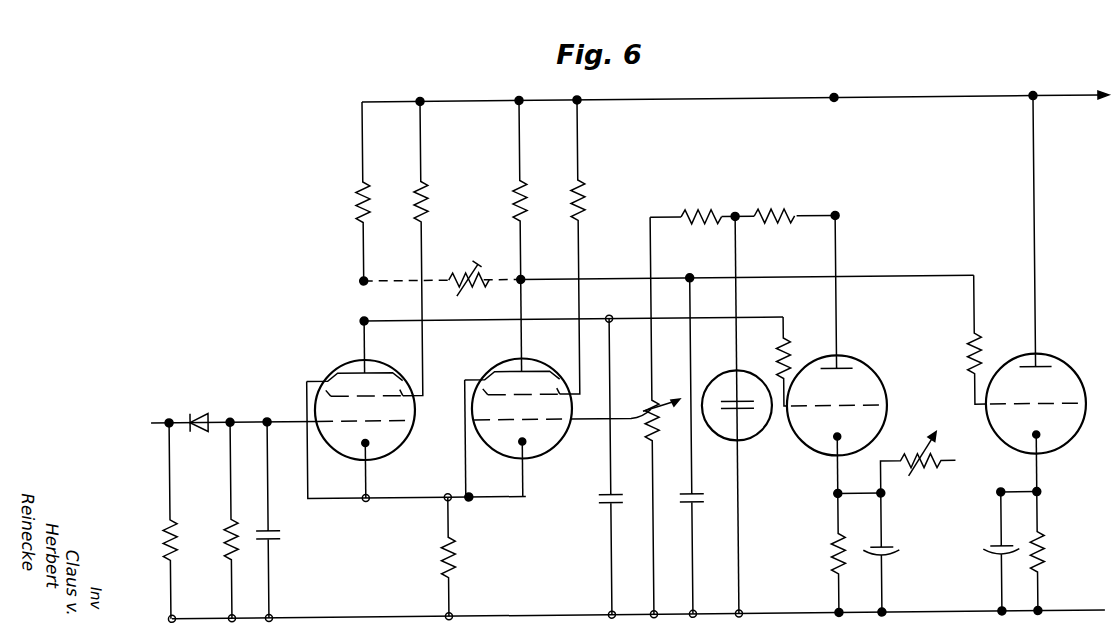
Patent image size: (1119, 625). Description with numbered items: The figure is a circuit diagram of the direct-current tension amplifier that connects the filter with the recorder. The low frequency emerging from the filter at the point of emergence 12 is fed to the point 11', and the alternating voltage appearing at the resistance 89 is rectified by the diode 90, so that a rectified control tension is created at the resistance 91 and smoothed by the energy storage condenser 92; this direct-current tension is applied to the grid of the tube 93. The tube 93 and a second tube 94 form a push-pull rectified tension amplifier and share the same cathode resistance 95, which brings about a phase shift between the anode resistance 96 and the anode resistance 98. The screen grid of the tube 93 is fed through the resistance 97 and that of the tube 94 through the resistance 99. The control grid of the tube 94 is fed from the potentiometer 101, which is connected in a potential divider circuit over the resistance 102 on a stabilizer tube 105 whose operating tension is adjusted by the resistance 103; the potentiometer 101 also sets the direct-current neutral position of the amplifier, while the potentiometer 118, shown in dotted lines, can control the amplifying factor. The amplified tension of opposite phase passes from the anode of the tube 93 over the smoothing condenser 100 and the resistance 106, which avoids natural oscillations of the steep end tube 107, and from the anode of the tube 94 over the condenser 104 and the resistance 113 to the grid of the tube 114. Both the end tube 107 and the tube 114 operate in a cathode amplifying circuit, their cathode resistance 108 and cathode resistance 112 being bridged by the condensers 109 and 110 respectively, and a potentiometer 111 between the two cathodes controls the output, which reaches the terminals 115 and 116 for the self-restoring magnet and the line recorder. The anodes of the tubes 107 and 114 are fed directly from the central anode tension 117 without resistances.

The resistance 89 is at (163, 556).
The diode 90 is at (190, 432).
The resistance 91 is at (226, 517).
The energy storage condenser 92 is at (277, 540).
The tube 93 is at (390, 443).
The tube 94 is at (547, 443).
The cathode resistance 95 is at (437, 574).
The anode resistance 96 is at (369, 214).
The resistance 97 is at (428, 213).
The anode resistance 98 is at (526, 196).
The resistance 99 is at (584, 216).
The smoothing condenser 100 is at (620, 506).
The potentiometer 101 is at (652, 397).
The resistance 102 is at (708, 226).
The resistance 103 is at (782, 226).
The condenser 104 is at (680, 507).
The stabilizer tube 105 is at (722, 434).
The resistance 106 is at (789, 347).
The end tube 107 is at (881, 419).
The cathode resistance 108 is at (829, 561).
The condenser 109 is at (885, 548).
The condenser 110 is at (990, 548).
The potentiometer 111 is at (938, 440).
The cathode resistance 112 is at (1040, 565).
The resistance 113 is at (966, 350).
The tube 114 is at (1051, 449).
The terminal 115 is at (958, 466).
The terminal 116 is at (982, 498).
The central anode tension 117 is at (1104, 100).
The potentiometer 118 is at (471, 290).
The point 11' is at (127, 446).
The point of emergence 12 is at (50, 438).